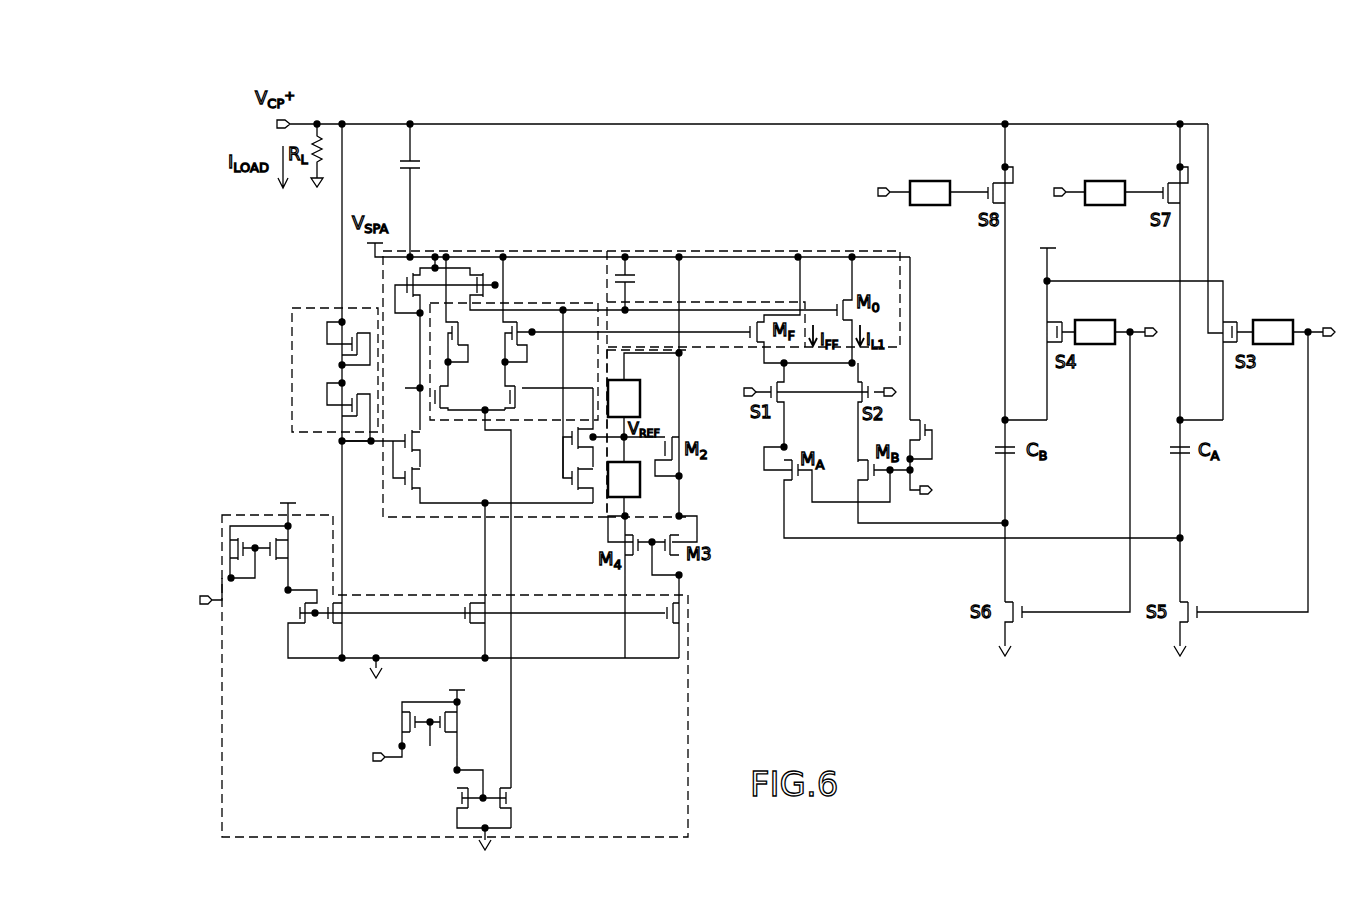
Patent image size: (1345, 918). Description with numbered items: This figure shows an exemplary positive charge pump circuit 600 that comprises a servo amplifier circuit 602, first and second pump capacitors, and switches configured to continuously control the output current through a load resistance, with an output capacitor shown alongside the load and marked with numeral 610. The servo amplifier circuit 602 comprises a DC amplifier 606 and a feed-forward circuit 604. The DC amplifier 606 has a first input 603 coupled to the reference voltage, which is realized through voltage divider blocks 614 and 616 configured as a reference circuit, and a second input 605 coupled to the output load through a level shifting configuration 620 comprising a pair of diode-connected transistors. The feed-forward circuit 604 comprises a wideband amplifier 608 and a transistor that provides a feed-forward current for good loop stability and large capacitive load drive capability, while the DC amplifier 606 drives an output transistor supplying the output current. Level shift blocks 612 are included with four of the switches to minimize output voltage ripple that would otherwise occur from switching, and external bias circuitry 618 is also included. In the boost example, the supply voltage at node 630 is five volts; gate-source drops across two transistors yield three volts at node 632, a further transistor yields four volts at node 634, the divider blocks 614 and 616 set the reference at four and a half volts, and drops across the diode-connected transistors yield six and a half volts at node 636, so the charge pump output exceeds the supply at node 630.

The positive charge pump circuit 600 is at (810, 117).
The servo amplifier circuit 602 is at (746, 240).
The first input 603 is at (582, 446).
The feed-forward circuit 604 is at (694, 303).
The second input 605 is at (371, 446).
The DC amplifier 606 is at (610, 454).
The wideband amplifier 608 is at (590, 522).
The load capacitor CL 610 is at (413, 183).
The level shift blocks 612 is at (930, 207).
The voltage divider block 614 is at (641, 392).
The voltage divider block 616 is at (641, 490).
The external bias circuitry 618 is at (222, 720).
The level shifting configuration 620 is at (290, 374).
The node 630 is at (680, 254).
The node 632 is at (682, 578).
The node 634 is at (628, 518).
The node 636 is at (340, 318).